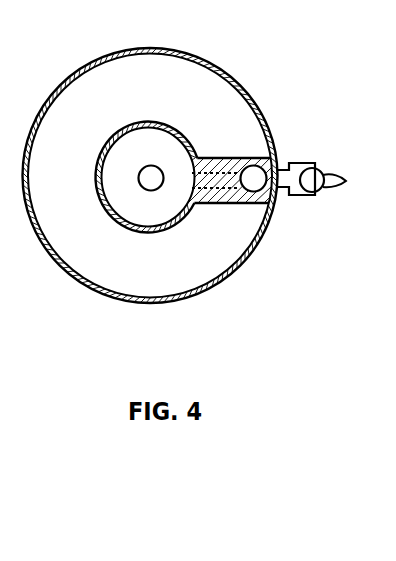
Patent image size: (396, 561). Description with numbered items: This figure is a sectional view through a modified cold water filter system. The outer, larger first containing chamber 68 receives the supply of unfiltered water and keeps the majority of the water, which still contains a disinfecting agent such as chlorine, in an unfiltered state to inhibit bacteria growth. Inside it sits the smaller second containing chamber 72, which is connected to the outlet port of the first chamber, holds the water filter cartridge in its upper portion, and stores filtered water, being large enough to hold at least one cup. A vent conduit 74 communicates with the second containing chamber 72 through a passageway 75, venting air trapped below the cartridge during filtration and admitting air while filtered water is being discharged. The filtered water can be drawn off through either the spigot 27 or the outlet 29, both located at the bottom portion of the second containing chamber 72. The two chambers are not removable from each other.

The spigot 27 is at (333, 191).
The outlet 29 is at (153, 190).
The first containing chamber 68 is at (252, 100).
The second containing chamber 72 is at (157, 132).
The vent conduit 74 is at (249, 190).
The passageway 75 is at (215, 204).